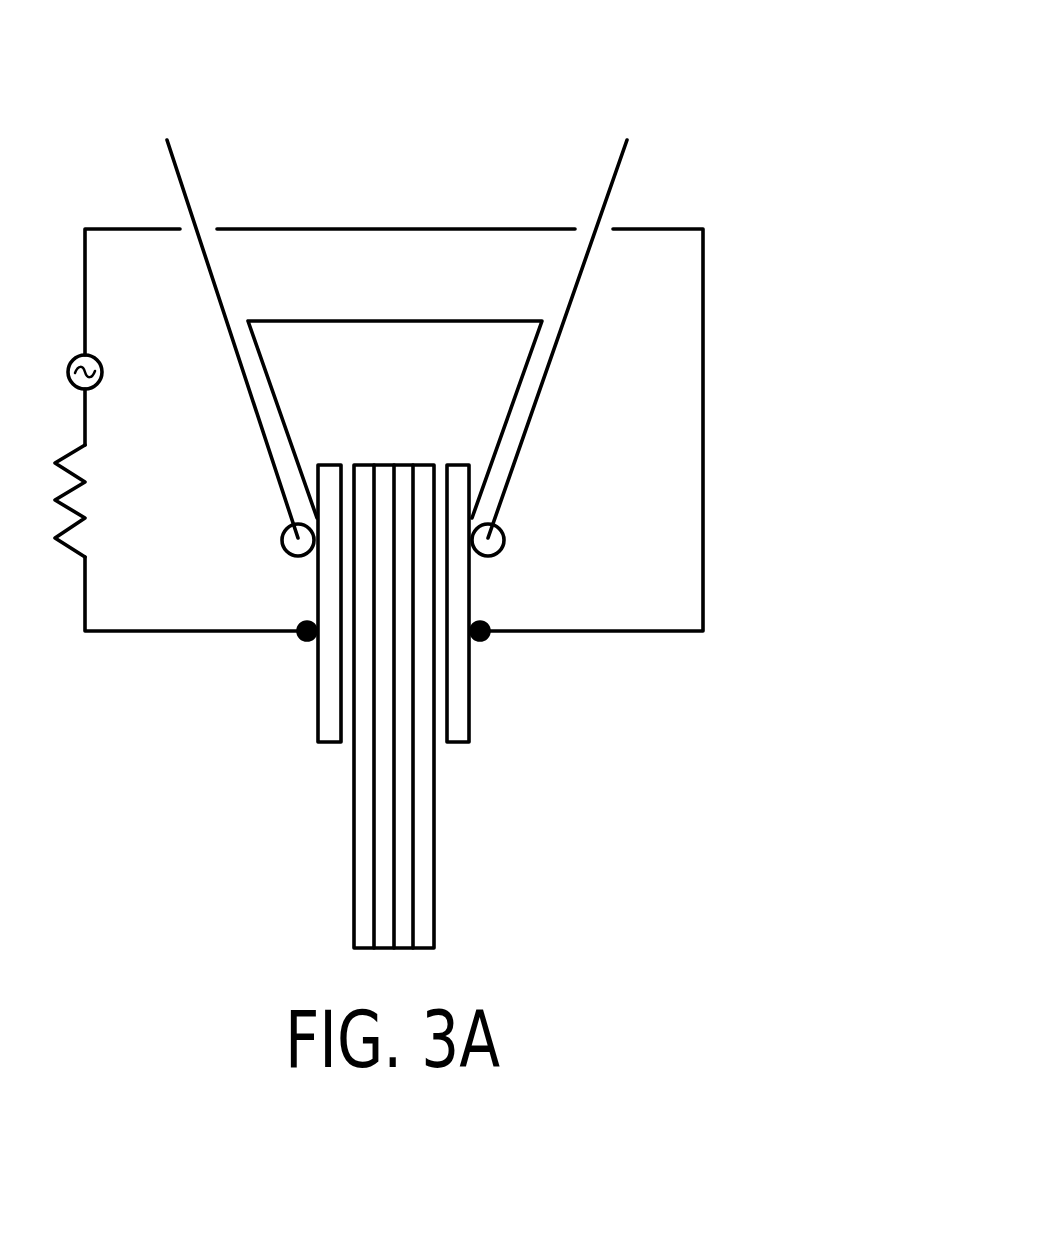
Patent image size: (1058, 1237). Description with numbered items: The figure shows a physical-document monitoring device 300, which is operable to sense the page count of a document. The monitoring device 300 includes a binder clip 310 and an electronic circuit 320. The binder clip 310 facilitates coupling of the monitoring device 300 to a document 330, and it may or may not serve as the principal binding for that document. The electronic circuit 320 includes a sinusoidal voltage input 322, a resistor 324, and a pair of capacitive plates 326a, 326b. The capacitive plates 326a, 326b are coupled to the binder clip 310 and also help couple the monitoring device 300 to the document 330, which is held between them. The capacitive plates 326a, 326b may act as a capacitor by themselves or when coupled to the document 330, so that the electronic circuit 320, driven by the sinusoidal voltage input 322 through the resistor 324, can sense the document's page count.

The physical-document monitoring device 300 is at (814, 107).
The binder clip 310 is at (332, 323).
The electronic circuit 320 is at (703, 463).
The sinusoidal voltage input 322 is at (103, 372).
The resistor 324 is at (85, 482).
The capacitive plate 326a is at (317, 707).
The capacitive plate 326b is at (469, 707).
The document 330 is at (434, 823).